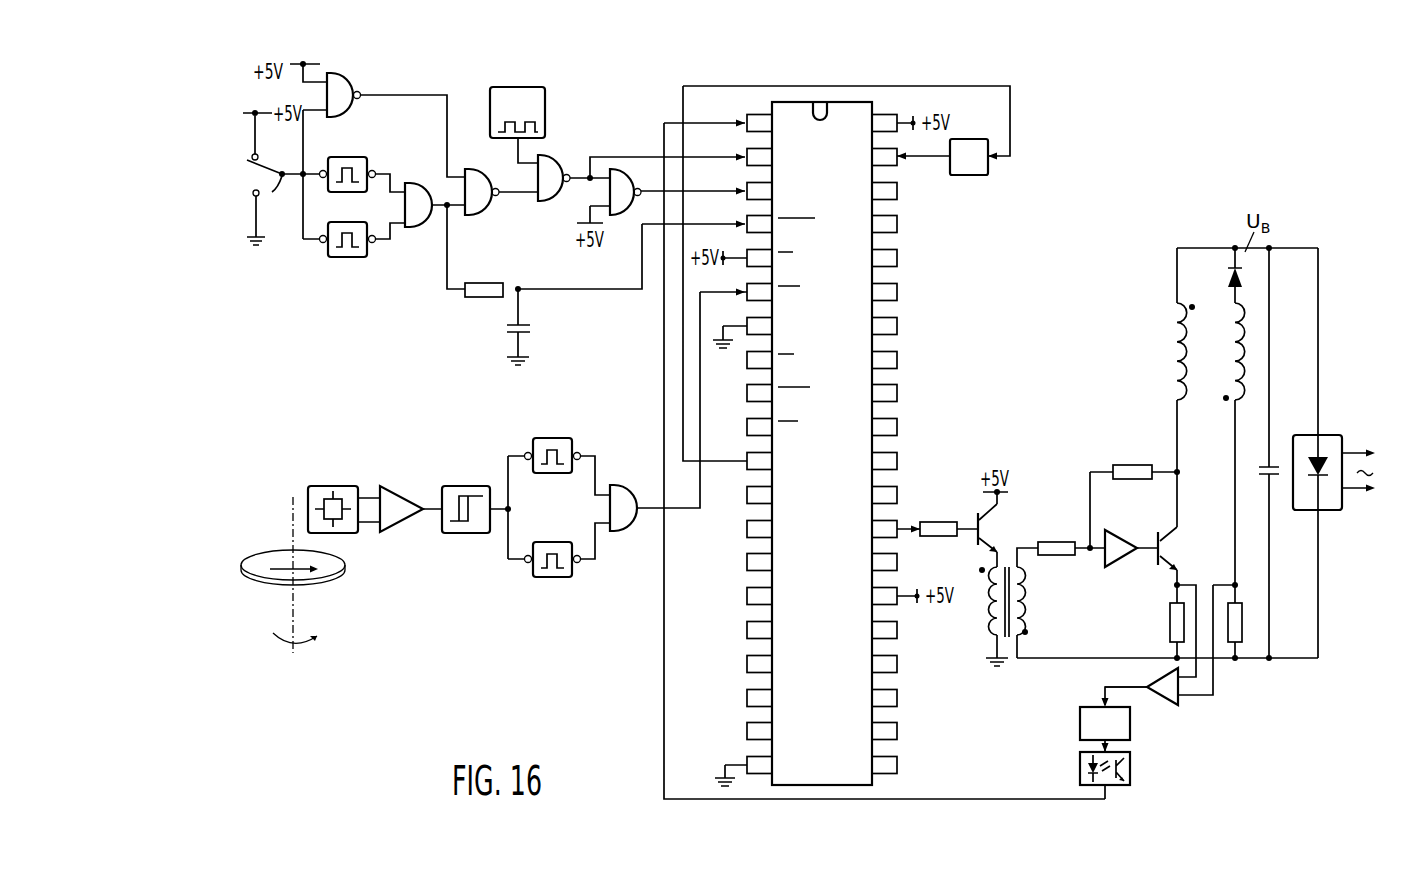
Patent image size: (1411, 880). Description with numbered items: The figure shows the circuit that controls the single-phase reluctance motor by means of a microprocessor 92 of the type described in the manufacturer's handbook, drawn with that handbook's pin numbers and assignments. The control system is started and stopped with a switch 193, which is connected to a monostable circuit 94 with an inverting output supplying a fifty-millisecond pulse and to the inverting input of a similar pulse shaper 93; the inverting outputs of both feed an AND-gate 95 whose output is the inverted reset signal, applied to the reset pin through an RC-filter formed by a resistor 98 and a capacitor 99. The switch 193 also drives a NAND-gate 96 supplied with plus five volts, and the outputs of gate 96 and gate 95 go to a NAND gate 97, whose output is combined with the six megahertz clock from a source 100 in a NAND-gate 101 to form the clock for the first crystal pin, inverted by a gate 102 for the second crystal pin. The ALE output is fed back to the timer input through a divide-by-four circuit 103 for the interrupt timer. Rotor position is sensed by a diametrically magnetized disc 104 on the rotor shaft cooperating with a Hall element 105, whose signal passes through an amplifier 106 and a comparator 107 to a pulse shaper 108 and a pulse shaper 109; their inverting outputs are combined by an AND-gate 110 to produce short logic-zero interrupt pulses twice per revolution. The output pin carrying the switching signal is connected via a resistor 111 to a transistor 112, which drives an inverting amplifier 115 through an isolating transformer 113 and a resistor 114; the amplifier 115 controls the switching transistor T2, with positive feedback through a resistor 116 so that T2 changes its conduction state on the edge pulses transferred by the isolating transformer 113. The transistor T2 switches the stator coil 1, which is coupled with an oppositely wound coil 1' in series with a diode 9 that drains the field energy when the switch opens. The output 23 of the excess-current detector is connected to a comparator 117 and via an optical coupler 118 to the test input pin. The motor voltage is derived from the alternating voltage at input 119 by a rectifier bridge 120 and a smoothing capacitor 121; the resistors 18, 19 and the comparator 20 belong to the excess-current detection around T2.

The coil 1 is at (1166, 351).
The coil 1' is at (1225, 351).
The diode 9 is at (1228, 281).
The resistor 18 is at (1170, 622).
The resistor 19 is at (1246, 622).
The comparator 20 is at (1155, 696).
The output of the excess-current detector 23 is at (1126, 687).
The microprocessor 92 is at (868, 787).
The pulse shaper 93 is at (350, 157).
The monostable circuit 94 is at (349, 222).
The AND-gate 95 is at (420, 190).
The NAND-gate 96 is at (348, 83).
The NAND gate 97 is at (482, 177).
The RC-filter resistor 98 is at (476, 290).
The RC-filter capacitor 99 is at (511, 332).
The clock signal source 100 is at (497, 93).
The NAND-gate 101 is at (546, 156).
The gate 102 is at (620, 185).
The divide-by-four circuit 103 is at (977, 139).
The diametrically magnetized disc 104 is at (346, 566).
The Hall element 105 is at (345, 486).
The amplifier 106 is at (393, 488).
The comparator 107 is at (462, 488).
The pulse shaper 108 is at (562, 440).
The pulse shaper 109 is at (562, 543).
The AND-gate 110 is at (625, 488).
The resistor 111 is at (938, 522).
The transistor 112 is at (999, 524).
The isolating transformer 113 is at (1007, 640).
The resistor 114 is at (1058, 542).
The inverting amplifier 115 is at (1118, 537).
The resistor 116 is at (1125, 465).
The comparator 117 is at (1080, 736).
The optical coupler 118 is at (1080, 776).
The input 119 is at (1370, 486).
The rectifier bridge 120 is at (1296, 442).
The smoothing capacitor 121 is at (1260, 468).
The switch 193 is at (275, 180).
The switching transistor T2 is at (1178, 543).